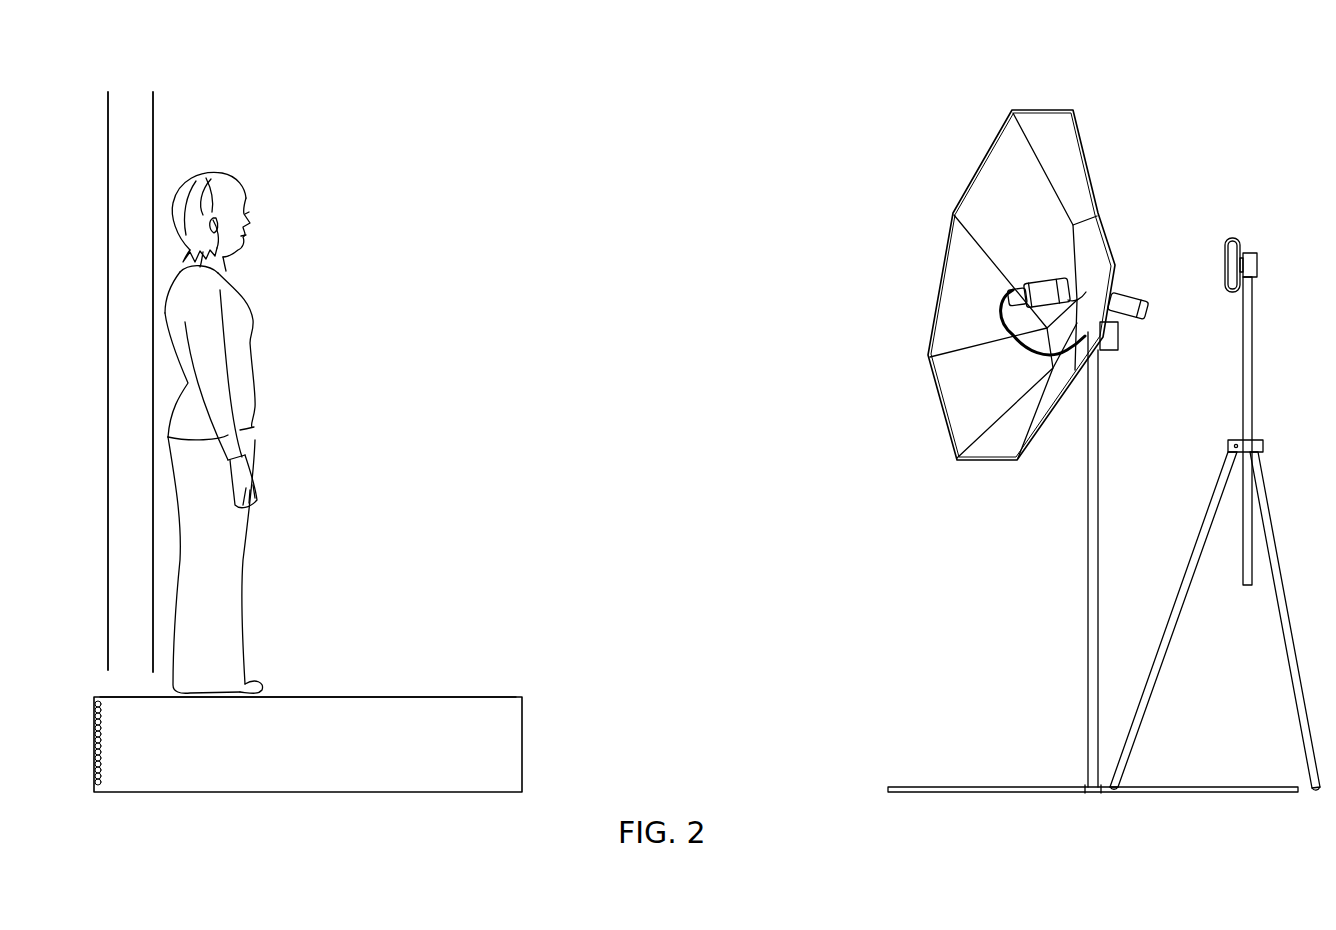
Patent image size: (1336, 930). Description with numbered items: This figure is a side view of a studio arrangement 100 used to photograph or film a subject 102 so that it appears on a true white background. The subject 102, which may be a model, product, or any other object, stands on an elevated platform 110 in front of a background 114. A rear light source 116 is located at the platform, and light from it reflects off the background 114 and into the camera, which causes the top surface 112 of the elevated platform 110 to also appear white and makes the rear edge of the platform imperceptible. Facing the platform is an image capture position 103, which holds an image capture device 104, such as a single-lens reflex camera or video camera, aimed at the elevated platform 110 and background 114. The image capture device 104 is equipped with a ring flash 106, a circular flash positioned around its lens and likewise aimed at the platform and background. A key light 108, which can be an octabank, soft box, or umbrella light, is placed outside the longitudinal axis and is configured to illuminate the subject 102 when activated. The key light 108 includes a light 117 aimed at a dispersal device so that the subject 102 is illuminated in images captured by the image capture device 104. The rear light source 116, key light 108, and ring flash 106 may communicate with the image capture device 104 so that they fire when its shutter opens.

The studio arrangement 100 is at (470, 78).
The subject 102 is at (216, 172).
The image capture position 103 is at (1227, 310).
The image capture device 104 is at (1258, 265).
The ring flash 106 is at (1226, 240).
The key light 108 is at (1043, 109).
The elevated platform 110 is at (523, 742).
The top surface 112 is at (372, 697).
The background 114 is at (109, 92).
The rear light source 116 is at (103, 740).
The light 117 is at (1008, 290).